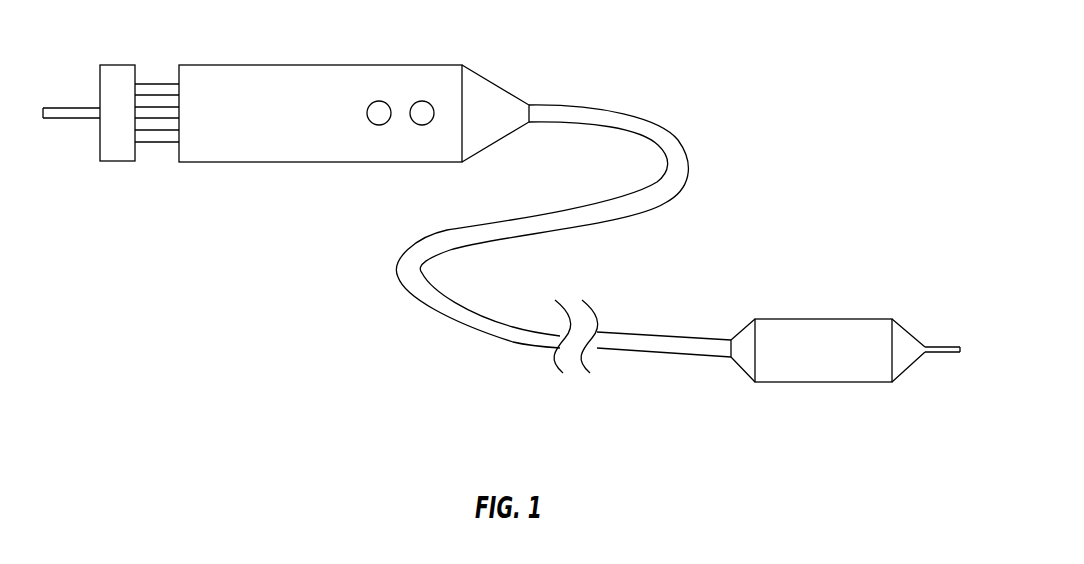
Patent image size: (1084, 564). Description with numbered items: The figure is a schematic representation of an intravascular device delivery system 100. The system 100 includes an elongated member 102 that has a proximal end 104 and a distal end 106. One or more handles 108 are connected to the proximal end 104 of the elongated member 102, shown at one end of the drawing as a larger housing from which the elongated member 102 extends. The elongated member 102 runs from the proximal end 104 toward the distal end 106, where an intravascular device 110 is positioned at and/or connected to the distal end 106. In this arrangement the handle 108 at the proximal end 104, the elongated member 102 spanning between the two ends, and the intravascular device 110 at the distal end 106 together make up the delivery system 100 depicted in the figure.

The intravascular device delivery system 100 is at (762, 160).
The elongated member 102 is at (665, 203).
The proximal end 104 is at (545, 99).
The distal end 106 is at (880, 313).
The handle 108 is at (322, 65).
The intravascular device 110 is at (836, 370).